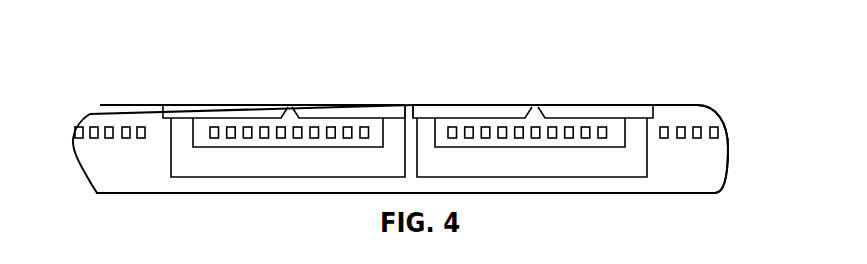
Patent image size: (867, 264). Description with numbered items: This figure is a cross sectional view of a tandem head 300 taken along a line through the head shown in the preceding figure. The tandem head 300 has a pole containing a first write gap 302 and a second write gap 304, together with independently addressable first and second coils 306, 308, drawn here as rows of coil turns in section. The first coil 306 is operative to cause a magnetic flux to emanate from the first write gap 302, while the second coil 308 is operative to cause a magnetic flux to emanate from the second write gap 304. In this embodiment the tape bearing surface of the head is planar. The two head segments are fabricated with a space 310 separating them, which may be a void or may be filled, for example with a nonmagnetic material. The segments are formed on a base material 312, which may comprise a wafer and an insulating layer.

The tandem head 300 is at (142, 96).
The first write gap 302 is at (287, 105).
The second write gap 304 is at (532, 105).
The first coil 306 is at (138, 138).
The second coil 308 is at (587, 138).
The space 310 is at (410, 92).
The base material 312 is at (693, 187).